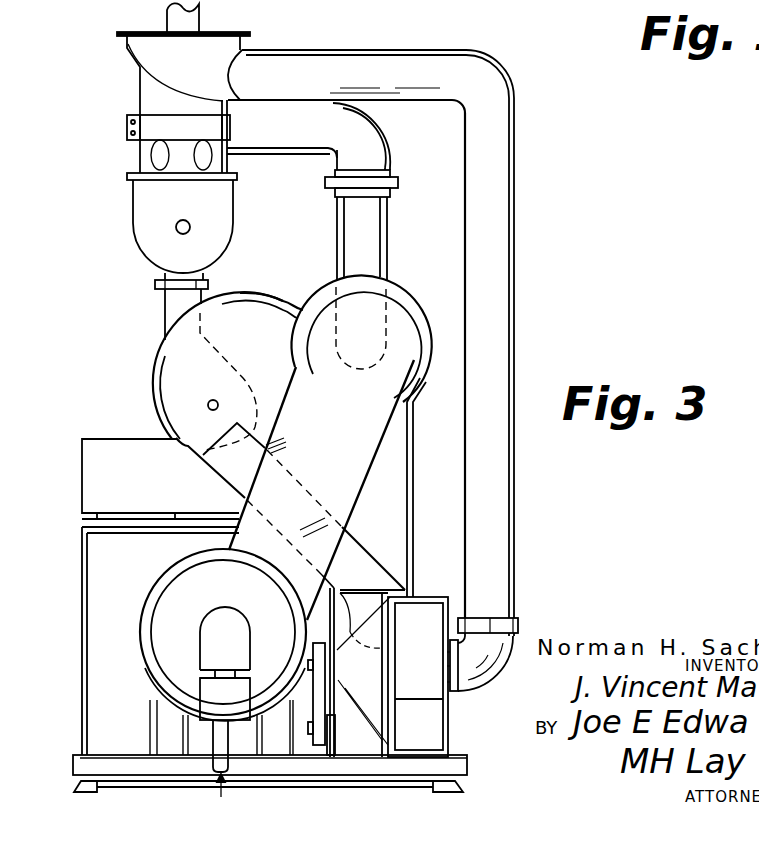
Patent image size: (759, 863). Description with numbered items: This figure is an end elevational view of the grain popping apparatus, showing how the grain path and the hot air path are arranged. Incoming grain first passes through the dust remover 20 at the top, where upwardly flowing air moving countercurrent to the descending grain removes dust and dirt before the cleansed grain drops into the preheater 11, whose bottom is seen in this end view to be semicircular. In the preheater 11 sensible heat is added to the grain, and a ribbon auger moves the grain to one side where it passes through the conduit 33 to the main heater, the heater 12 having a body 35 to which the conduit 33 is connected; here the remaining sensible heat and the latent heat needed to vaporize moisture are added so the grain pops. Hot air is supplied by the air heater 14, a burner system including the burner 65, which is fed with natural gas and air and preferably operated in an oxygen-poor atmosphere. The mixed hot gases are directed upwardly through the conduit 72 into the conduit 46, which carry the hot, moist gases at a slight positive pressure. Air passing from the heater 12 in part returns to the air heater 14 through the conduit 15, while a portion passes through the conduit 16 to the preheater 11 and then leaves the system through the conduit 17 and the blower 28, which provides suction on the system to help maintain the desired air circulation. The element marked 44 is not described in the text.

The preheater 11 is at (134, 242).
The heater 12 is at (153, 385).
The air heater 14 is at (143, 648).
The conduit 15 is at (338, 444).
The conduit 16 is at (363, 136).
The conduit 17 is at (362, 62).
The dust remover 20 is at (140, 101).
The blower 28 is at (376, 684).
The conduit 33 is at (178, 306).
The body 35 is at (263, 296).
The fan 44 is at (395, 285).
The conduit 46 is at (155, 487).
The burner 65 is at (212, 608).
The conduit 72 is at (82, 522).